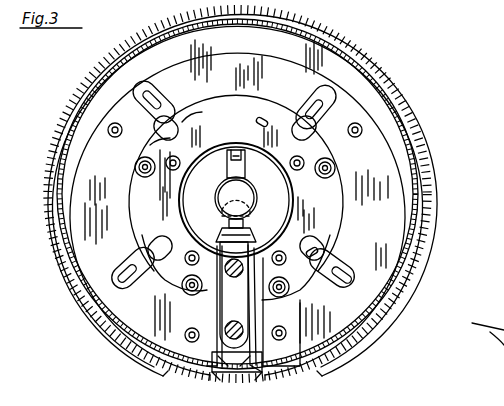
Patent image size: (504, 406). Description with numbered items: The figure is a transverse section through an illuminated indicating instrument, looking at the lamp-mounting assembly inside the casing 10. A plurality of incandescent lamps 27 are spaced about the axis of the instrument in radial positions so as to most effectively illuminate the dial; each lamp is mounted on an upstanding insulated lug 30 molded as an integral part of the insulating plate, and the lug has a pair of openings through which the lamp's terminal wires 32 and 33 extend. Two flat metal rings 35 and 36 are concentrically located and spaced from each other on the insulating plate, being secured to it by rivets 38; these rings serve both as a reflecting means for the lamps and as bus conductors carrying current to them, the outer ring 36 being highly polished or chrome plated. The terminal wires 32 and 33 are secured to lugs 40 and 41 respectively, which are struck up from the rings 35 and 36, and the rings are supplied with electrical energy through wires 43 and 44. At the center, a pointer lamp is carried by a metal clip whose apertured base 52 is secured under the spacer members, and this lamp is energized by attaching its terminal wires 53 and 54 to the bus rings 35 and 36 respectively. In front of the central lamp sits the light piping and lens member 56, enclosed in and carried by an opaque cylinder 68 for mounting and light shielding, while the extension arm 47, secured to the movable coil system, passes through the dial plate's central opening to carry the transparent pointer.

The casing 10 is at (341, 31).
The incandescent lamps 27 is at (142, 88).
The insulated lugs 30 is at (143, 162).
The terminal wire 32 is at (163, 138).
The terminal wire 33 is at (197, 112).
The flat metal ring 35 is at (300, 197).
The flat metal ring 36 is at (382, 165).
The rivets 38 is at (108, 128).
The lugs 40 is at (256, 121).
The lugs 41 is at (150, 150).
The wire 43 is at (205, 357).
The wire 44 is at (258, 310).
The extension arm 47 is at (238, 150).
The apertured base 52 is at (229, 316).
The terminal wire 53 is at (256, 246).
The terminal wire 54 is at (215, 318).
The light piping and lens member 56 is at (216, 200).
The opaque cylinder 68 is at (256, 197).